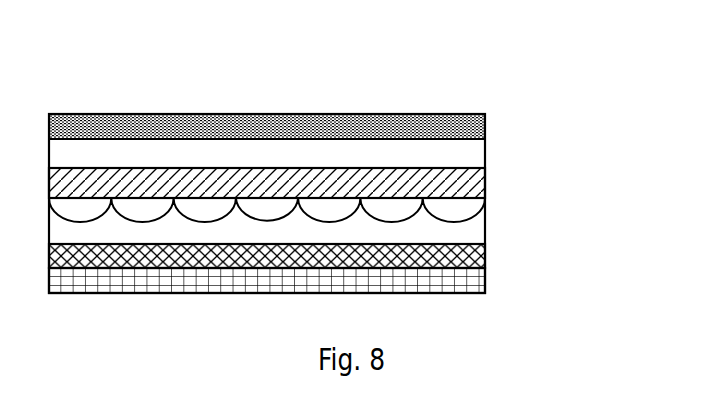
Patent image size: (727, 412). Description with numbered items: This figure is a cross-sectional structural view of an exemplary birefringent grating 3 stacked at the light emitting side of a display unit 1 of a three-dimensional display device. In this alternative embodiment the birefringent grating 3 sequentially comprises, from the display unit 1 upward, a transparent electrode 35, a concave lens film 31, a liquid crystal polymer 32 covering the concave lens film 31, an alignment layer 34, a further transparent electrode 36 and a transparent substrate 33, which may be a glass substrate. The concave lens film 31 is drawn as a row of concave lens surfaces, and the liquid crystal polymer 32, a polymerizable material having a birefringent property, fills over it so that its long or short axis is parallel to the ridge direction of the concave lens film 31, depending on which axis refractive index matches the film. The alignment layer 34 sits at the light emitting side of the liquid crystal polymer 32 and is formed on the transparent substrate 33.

The birefringent grating 3 is at (153, 108).
The transparent substrate 33 is at (485, 128).
The transparent electrode 36 is at (485, 157).
The alignment layer 34 is at (485, 185).
The liquid crystal polymer 32 is at (464, 213).
The concave lens film 31 is at (467, 226).
The transparent electrode 35 is at (485, 258).
The display unit 1 is at (475, 285).